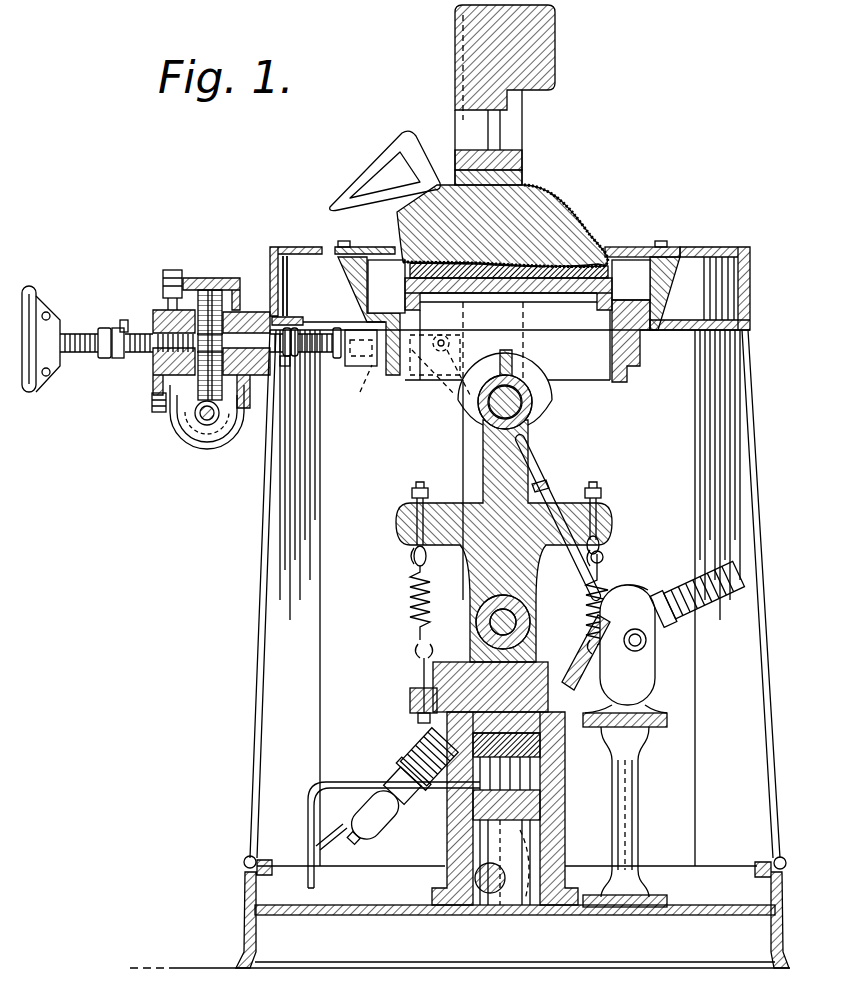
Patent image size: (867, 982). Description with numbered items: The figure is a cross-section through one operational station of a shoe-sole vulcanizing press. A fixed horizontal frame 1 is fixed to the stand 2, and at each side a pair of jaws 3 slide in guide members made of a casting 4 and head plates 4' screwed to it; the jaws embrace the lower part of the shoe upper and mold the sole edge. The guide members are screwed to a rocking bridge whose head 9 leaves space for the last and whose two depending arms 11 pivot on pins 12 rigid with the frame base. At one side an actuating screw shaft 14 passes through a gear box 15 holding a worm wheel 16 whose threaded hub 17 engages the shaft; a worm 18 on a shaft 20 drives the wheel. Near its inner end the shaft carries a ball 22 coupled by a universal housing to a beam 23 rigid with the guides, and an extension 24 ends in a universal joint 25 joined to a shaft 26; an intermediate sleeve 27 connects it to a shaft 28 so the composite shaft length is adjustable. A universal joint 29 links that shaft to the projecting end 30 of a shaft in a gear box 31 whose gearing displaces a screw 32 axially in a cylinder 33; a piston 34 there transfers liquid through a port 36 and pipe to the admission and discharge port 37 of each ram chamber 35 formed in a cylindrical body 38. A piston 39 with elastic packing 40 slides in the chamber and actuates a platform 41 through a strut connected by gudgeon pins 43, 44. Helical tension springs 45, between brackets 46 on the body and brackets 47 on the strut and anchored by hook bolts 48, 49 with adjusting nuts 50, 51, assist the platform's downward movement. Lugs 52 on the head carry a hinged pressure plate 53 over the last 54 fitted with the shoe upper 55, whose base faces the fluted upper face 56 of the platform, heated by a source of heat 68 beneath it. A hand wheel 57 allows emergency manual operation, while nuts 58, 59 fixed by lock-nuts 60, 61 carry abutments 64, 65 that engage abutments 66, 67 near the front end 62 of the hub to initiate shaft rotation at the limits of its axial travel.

The fixed horizontal frame 1 is at (278, 247).
The stand 2 is at (258, 622).
The jaws 3 is at (509, 286).
The casting 4 is at (502, 295).
The head plates 4' is at (642, 237).
The head 9 is at (548, 58).
The depending arms 11 is at (472, 453).
The pins 12 is at (485, 915).
The actuating screw shaft 14 is at (80, 334).
The gear box 15 is at (172, 270).
The worm wheel 16 is at (212, 278).
The hub 17 is at (248, 312).
The worm 18 is at (200, 420).
The worm shaft 20 is at (222, 446).
The ball 22 is at (364, 393).
The beam 23 is at (362, 367).
The extension 24 is at (414, 405).
The universal joint 25 is at (440, 352).
The shaft 26 is at (462, 400).
The intermediate sleeve 27 is at (540, 458).
The shaft 28 is at (603, 556).
The universal joint 29 is at (604, 640).
The projecting end 30 is at (630, 586).
The gear box 31 is at (648, 660).
The screw 32 is at (705, 578).
The cylinder 33 is at (576, 655).
The piston 34 is at (558, 742).
The ram chamber 35 is at (560, 795).
The port 36 is at (340, 826).
The admission and discharge port 37 is at (402, 795).
The cylindrical body 38 is at (562, 822).
The piston 39 is at (433, 690).
The elastic packing 40 is at (560, 772).
The platform 41 is at (598, 378).
The gudgeon pin 43 is at (476, 622).
The gudgeon pin 44 is at (532, 402).
The helical tension springs 45 is at (410, 584).
The brackets 46 is at (410, 708).
The brackets 47 is at (408, 515).
The hook bolt 48 is at (414, 650).
The hook bolt 49 is at (412, 552).
The nut 50 is at (418, 722).
The nut 51 is at (412, 493).
The lugs 52 is at (456, 158).
The pressure plate 53 is at (453, 178).
The last 54 is at (565, 218).
The shoe upper 55 is at (598, 252).
The upper face 56 is at (574, 300).
The hand wheel 57 is at (33, 288).
The nut 58 is at (118, 358).
The nut 59 is at (290, 328).
The lock-nut 60 is at (104, 358).
The lock-nut 61 is at (330, 332).
The front end 62 is at (155, 312).
The abutment 64 is at (123, 320).
The abutment 65 is at (288, 264).
The abutment 66 is at (152, 398).
The abutment 67 is at (288, 368).
The source of heat 68 is at (500, 302).